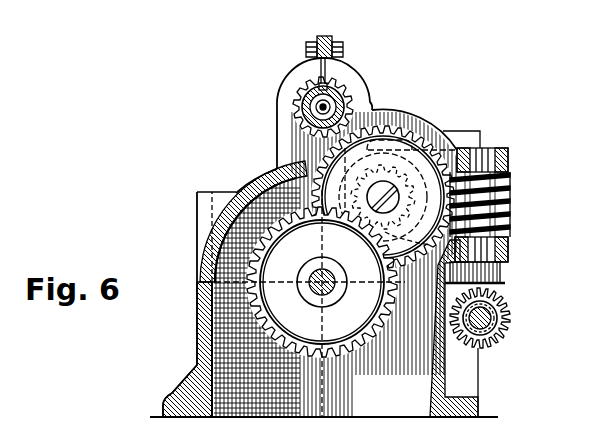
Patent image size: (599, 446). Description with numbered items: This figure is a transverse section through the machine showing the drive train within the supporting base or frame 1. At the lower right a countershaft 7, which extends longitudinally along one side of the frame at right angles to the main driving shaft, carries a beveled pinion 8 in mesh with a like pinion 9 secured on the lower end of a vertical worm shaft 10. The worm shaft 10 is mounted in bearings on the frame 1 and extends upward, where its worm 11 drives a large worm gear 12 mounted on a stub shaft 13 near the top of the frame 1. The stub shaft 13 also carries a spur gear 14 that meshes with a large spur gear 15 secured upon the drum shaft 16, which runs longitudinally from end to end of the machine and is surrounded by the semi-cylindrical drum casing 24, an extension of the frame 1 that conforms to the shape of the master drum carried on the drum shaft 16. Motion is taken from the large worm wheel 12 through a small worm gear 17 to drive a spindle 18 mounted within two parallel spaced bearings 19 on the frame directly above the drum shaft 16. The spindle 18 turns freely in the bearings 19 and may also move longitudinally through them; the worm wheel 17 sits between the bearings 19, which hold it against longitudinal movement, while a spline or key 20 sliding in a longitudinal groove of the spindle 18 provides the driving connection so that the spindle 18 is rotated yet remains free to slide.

The supporting base or frame 1 is at (197, 365).
The countershaft 7 is at (503, 338).
The beveled pinion 8 is at (497, 320).
The beveled pinion 9 is at (507, 284).
The vertical worm shaft 10 is at (508, 151).
The worm 11 is at (510, 203).
The large worm gear 12 is at (440, 132).
The stub shaft 13 is at (420, 215).
The spur gear 14 is at (425, 130).
The large spur gear 15 is at (356, 350).
The drum shaft 16 is at (318, 290).
The small worm gear 17 is at (350, 92).
The spindle 18 is at (313, 98).
The bearings 19 is at (350, 75).
The spline or key 20 is at (322, 85).
The drum casing 24 is at (242, 186).